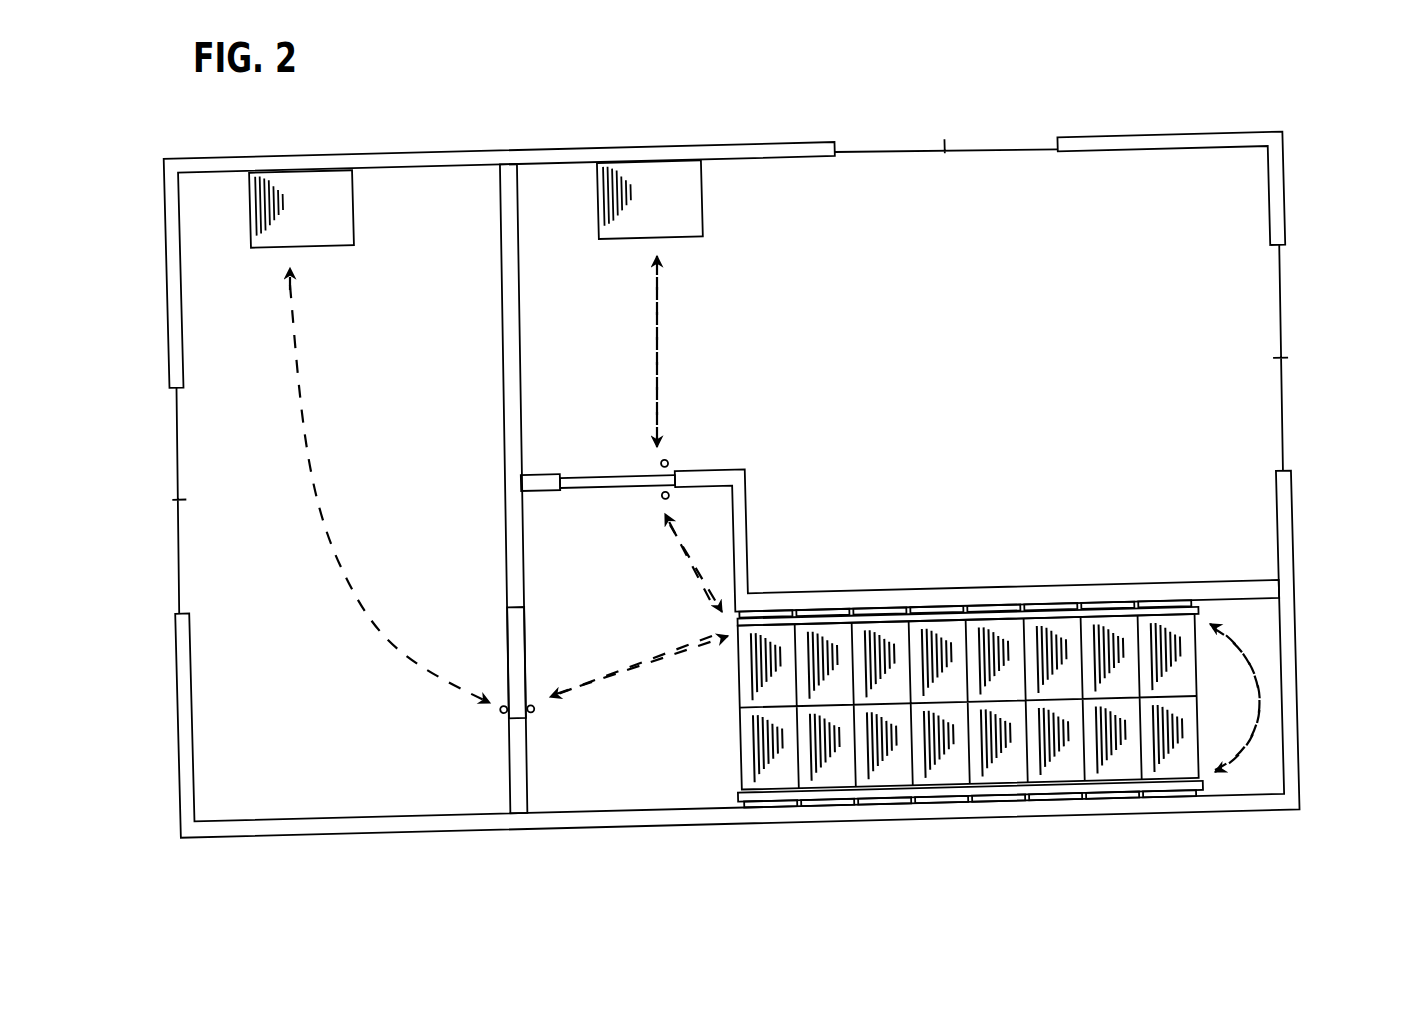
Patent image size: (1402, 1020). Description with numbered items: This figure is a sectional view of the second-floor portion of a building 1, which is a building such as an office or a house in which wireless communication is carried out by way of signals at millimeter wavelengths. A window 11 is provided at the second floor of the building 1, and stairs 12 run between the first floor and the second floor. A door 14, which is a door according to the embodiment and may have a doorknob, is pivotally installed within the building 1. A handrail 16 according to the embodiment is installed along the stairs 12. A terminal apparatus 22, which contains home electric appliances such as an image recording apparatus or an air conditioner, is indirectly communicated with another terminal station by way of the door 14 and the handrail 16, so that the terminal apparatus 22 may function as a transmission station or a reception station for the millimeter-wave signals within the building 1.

The building 1 is at (658, 137).
The window 11 is at (900, 150).
The stairs 12 is at (737, 658).
The door 14 is at (625, 472).
The handrail 16 is at (1205, 608).
The terminal apparatus 22 is at (308, 246).